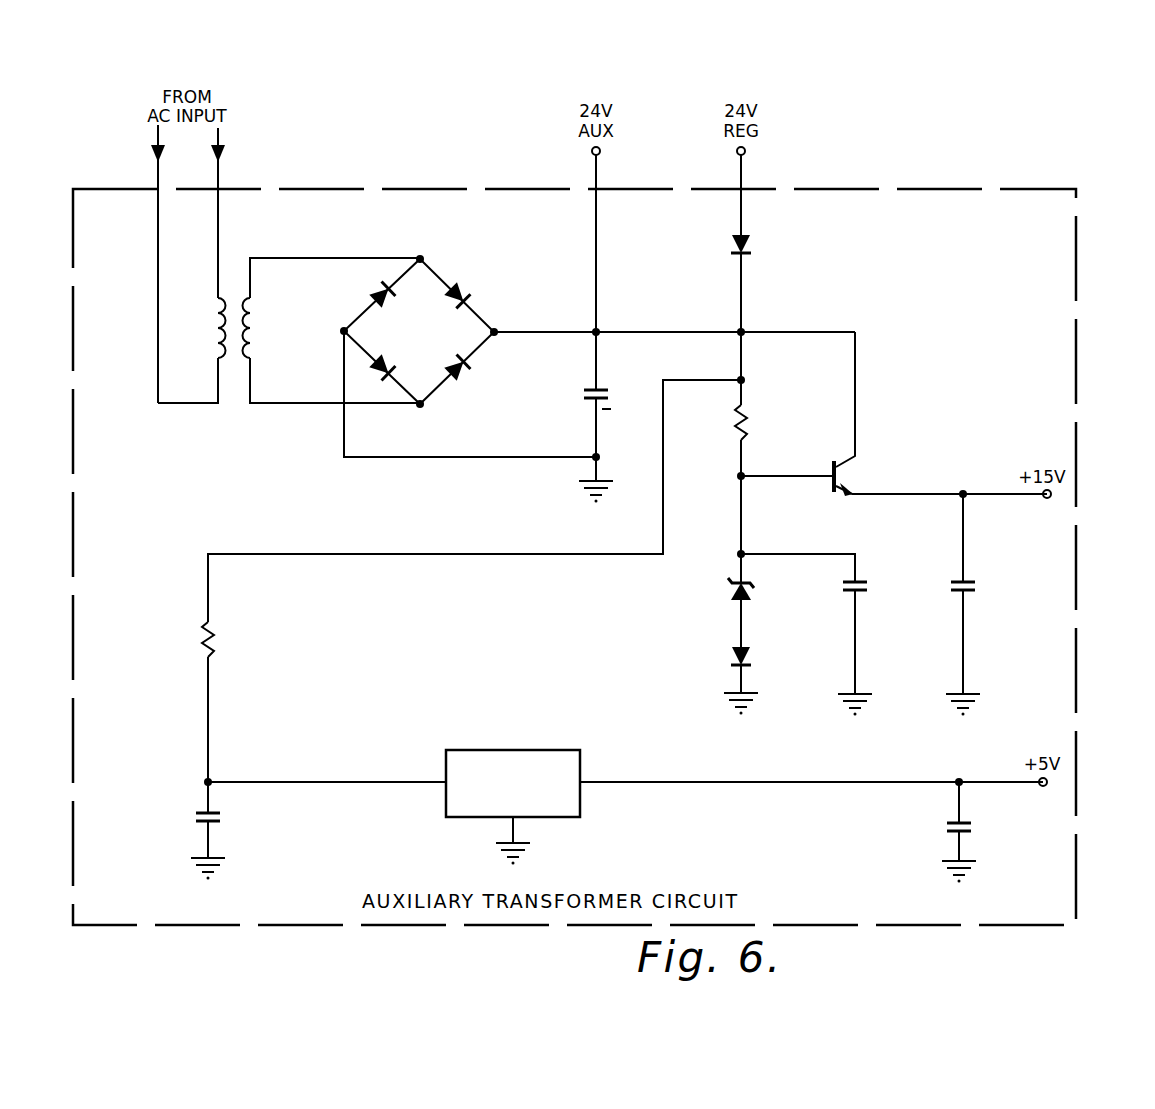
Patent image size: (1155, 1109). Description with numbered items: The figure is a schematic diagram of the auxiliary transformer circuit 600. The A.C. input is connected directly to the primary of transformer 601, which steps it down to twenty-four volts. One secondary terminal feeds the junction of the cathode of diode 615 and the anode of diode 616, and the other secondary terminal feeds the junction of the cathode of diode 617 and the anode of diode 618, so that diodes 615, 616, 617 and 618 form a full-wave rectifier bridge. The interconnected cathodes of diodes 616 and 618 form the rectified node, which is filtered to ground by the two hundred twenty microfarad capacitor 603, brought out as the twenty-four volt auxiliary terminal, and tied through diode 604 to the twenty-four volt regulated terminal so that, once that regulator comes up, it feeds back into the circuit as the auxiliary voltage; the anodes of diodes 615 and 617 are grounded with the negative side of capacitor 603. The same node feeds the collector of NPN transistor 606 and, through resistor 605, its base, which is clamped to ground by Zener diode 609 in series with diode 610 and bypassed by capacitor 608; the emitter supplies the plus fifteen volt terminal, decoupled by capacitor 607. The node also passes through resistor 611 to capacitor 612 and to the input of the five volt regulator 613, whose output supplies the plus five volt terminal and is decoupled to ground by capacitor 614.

The auxiliary transformer circuit 600 is at (574, 557).
The transformer 601 is at (289, 330).
The capacitor 603 is at (576, 391).
The diode 604 is at (760, 245).
The resistor 605 is at (759, 422).
The NPN transistor 606 is at (831, 464).
The capacitor 607 is at (981, 586).
The capacitor 608 is at (874, 586).
The Zener diode 609 is at (718, 591).
The diode 610 is at (719, 654).
The resistor 611 is at (229, 639).
The capacitor 612 is at (230, 816).
The 5 volt regulator 613 is at (517, 750).
The capacitor 614 is at (978, 826).
The diode 615 is at (366, 291).
The diode 616 is at (476, 291).
The diode 617 is at (399, 363).
The diode 618 is at (477, 371).